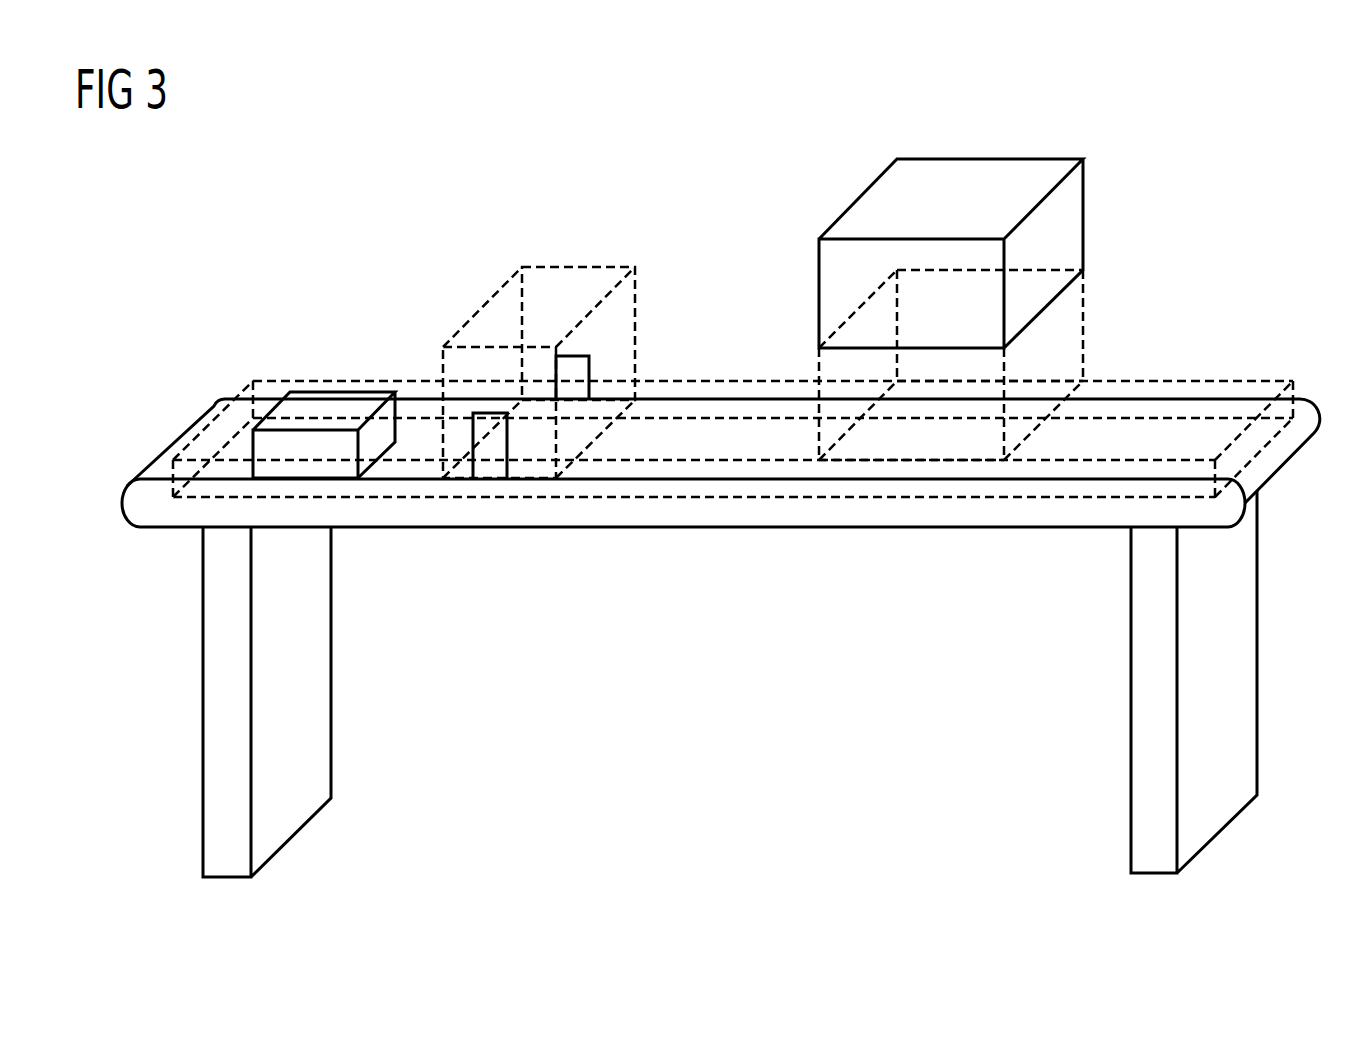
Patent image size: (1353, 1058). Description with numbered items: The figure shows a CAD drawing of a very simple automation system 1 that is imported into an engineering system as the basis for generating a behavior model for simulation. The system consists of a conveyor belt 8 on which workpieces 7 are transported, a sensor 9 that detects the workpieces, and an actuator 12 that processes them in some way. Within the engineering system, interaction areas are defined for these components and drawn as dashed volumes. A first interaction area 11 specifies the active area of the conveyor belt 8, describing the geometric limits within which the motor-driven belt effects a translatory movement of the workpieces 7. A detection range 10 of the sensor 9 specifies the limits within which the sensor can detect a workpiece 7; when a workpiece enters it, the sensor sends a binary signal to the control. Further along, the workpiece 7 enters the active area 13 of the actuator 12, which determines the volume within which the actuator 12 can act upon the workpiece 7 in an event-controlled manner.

The apparatus 1 is at (1188, 148).
The workpiece 7 is at (343, 402).
The conveyor belt 8 is at (218, 697).
The sensor 9 is at (492, 480).
The detection range 10 is at (620, 313).
The interaction area 11 is at (668, 486).
The actuator 12 is at (1068, 217).
The active area 13 is at (1068, 318).